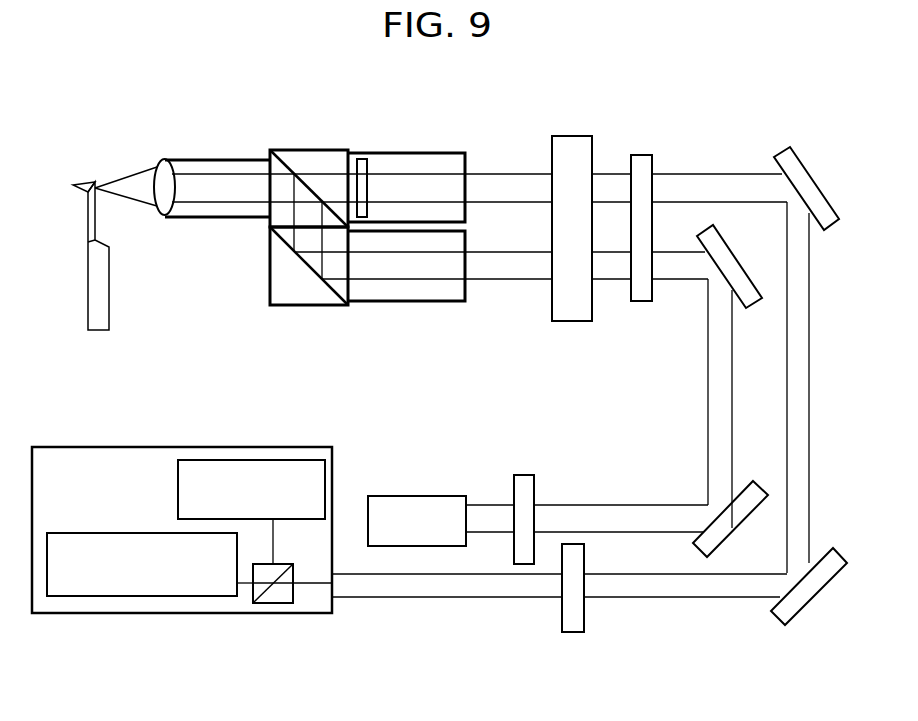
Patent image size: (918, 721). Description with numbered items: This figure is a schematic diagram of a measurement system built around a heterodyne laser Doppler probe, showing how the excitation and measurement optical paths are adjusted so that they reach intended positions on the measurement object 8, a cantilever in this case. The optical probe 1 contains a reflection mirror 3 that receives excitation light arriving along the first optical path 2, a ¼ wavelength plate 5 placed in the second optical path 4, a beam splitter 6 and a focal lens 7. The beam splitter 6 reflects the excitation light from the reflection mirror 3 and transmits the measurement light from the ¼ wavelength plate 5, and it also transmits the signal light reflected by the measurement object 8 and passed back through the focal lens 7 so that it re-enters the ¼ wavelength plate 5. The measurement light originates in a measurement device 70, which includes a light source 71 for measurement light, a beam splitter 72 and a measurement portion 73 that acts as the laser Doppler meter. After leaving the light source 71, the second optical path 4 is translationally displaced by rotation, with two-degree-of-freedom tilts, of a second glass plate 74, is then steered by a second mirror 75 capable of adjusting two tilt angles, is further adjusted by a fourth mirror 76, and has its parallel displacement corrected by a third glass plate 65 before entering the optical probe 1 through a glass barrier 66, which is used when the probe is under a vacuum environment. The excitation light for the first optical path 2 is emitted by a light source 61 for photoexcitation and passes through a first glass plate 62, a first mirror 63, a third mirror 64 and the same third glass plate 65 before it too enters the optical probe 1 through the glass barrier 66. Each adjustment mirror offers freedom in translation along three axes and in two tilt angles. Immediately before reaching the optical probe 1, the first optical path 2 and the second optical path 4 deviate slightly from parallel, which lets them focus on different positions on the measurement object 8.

The optical probe 1 is at (447, 148).
The first optical path 2 is at (502, 280).
The reflection mirror 3 is at (339, 302).
The second optical path 4 is at (493, 177).
The ¼ wavelength plate 5 is at (365, 156).
The beam splitter 6 is at (280, 155).
The focal lens 7 is at (164, 158).
The measurement object 8 is at (95, 180).
The light source for photoexcitation 61 is at (428, 493).
The first glass plate for optical path adjustment 62 is at (535, 492).
The first mirror for optical path adjustment 63 is at (750, 516).
The third mirror for optical path adjustment 64 is at (740, 262).
The third glass plate for optical path adjustment 65 is at (642, 155).
The glass barrier 66 is at (572, 136).
The measurement device 70 is at (312, 442).
The light source for measurement light 71 is at (165, 598).
The beam splitter 72 is at (272, 604).
The measurement portion 73 is at (267, 460).
The second glass plate for optical path adjustment 74 is at (573, 632).
The second mirror for optical path adjustment 75 is at (780, 623).
The fourth mirror for optical path adjustment 76 is at (793, 148).